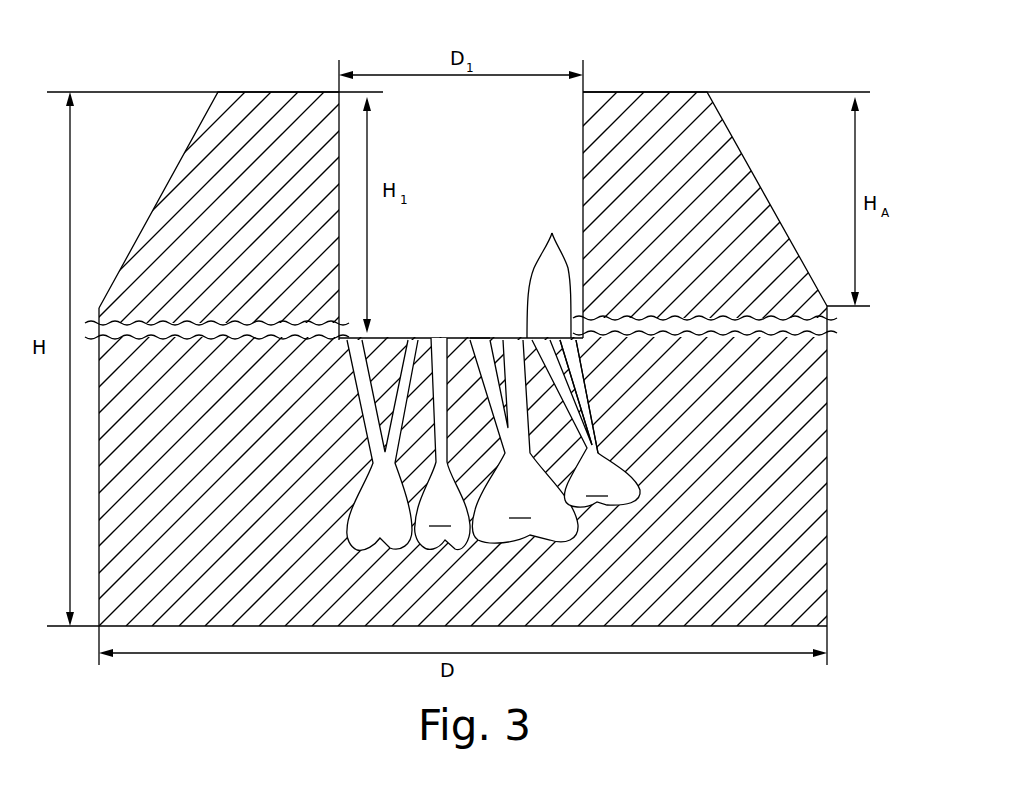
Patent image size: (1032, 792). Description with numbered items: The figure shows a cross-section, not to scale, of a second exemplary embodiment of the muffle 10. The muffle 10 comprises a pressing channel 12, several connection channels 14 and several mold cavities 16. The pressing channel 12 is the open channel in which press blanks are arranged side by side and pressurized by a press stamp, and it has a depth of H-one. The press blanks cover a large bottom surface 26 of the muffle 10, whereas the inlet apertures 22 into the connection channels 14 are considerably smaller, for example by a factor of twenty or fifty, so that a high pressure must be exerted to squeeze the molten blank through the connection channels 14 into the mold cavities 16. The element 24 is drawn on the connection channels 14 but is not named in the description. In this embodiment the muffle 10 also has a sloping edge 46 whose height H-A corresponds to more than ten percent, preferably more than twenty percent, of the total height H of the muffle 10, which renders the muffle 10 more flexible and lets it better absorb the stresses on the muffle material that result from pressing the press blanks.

The muffle 10 is at (856, 56).
The pressing channel 12 is at (515, 169).
The connection channels 14 is at (590, 400).
The mold cavities 16 is at (393, 526).
The inlet apertures 22 is at (552, 233).
The stem 24 is at (597, 453).
The bottom surface 26 is at (478, 324).
The sloping edge 46 is at (805, 171).